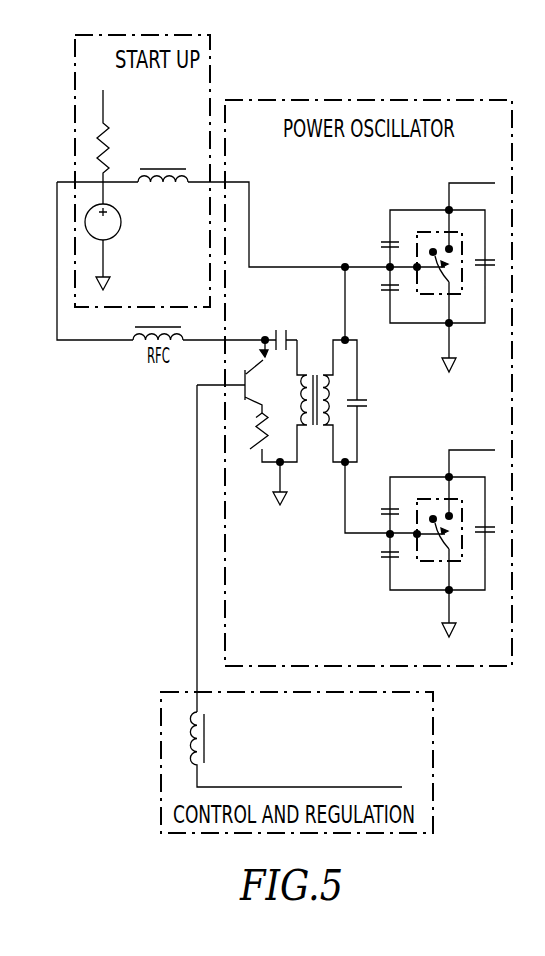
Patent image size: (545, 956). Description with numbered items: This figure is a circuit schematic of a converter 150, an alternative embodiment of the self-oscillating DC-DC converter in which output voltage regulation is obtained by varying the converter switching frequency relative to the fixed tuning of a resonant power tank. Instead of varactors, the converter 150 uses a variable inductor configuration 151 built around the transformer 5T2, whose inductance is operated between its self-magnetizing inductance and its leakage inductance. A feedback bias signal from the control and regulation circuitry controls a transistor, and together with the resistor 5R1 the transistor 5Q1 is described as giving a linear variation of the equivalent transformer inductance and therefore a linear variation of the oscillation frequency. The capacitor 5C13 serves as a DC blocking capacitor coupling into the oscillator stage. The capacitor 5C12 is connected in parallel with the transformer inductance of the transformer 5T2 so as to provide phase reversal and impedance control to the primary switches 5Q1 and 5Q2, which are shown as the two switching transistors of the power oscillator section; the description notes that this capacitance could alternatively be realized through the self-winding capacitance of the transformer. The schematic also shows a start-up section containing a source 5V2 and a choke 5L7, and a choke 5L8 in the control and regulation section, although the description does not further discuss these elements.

The converter 150 is at (140, 526).
The variable inductor configuration 151 is at (313, 450).
The RF choke inductor 5L7 is at (163, 179).
The start-up voltage source 5V2 is at (111, 247).
The capacitor 5C13 is at (281, 327).
The transformer 5T2 is at (312, 401).
The capacitor 5C12 is at (371, 401).
The resistor 5R1 is at (262, 459).
The transistor 5Q1 is at (438, 277).
The transistor 5Q2 is at (438, 543).
The RF choke inductor 5L8 is at (296, 749).